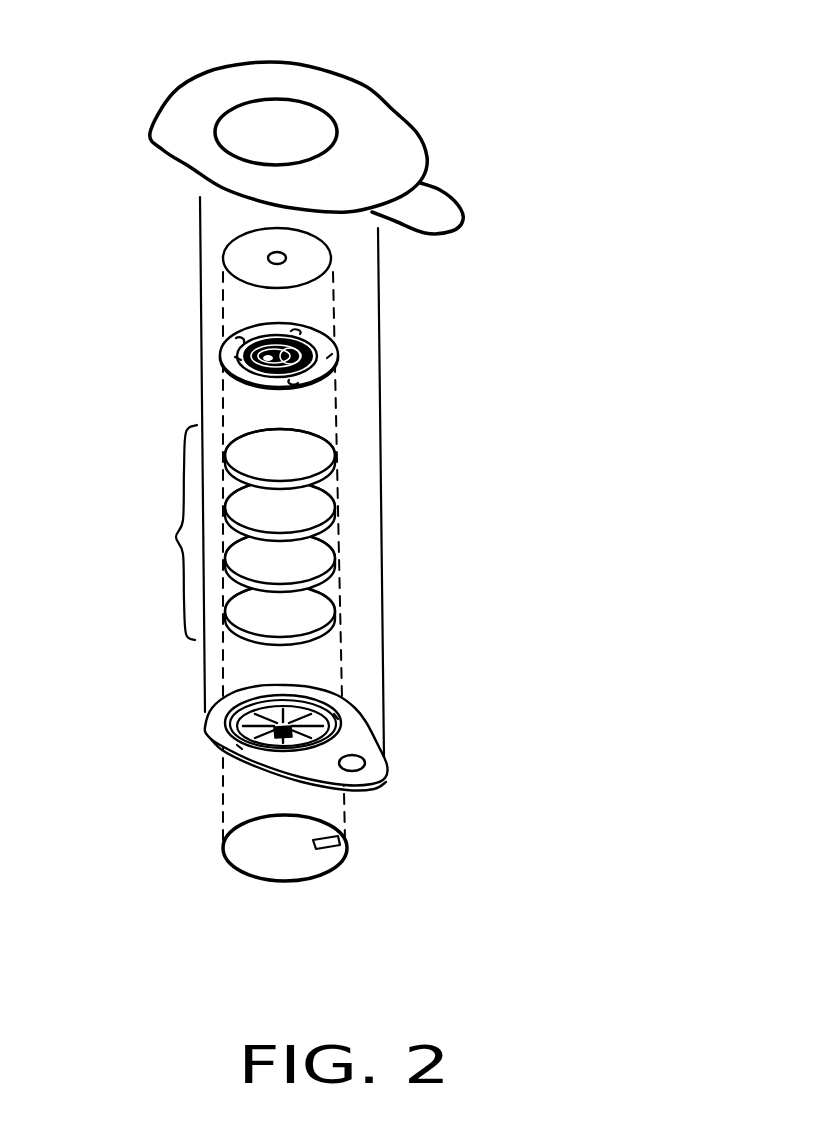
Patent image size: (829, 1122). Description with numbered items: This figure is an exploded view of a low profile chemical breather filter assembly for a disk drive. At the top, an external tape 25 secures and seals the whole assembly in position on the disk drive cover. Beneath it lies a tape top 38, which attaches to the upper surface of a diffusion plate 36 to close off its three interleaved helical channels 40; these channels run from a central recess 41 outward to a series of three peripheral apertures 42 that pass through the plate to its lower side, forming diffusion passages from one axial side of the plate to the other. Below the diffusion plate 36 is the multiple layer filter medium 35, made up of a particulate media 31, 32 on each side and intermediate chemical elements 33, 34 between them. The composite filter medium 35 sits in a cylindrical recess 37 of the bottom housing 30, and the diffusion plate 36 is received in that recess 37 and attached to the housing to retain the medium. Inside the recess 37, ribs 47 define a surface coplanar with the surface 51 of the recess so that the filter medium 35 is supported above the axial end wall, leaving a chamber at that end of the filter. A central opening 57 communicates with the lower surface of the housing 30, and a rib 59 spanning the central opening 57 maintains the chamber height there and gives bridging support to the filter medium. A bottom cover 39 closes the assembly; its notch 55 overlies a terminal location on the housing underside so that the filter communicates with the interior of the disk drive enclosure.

The external tape 25 is at (352, 72).
The bottom housing 30 is at (207, 725).
The particulate media 31 is at (320, 440).
The particulate media 32 is at (333, 593).
The intermediate chemical element 33 is at (332, 488).
The intermediate chemical element 34 is at (333, 542).
The multiple layer filter medium 35 is at (176, 537).
The diffusion plate 36 is at (332, 338).
The recess 37 is at (323, 693).
The tape top 38 is at (313, 236).
The bottom cover 39 is at (323, 878).
The interleaved helical channels 40 is at (240, 340).
The central recess 41 is at (268, 378).
The peripheral apertures 42 is at (237, 360).
The ribs 47 is at (337, 717).
The surface 51 is at (242, 707).
The notch 55 is at (340, 838).
The central opening 57 is at (287, 747).
The rib 59 is at (287, 728).